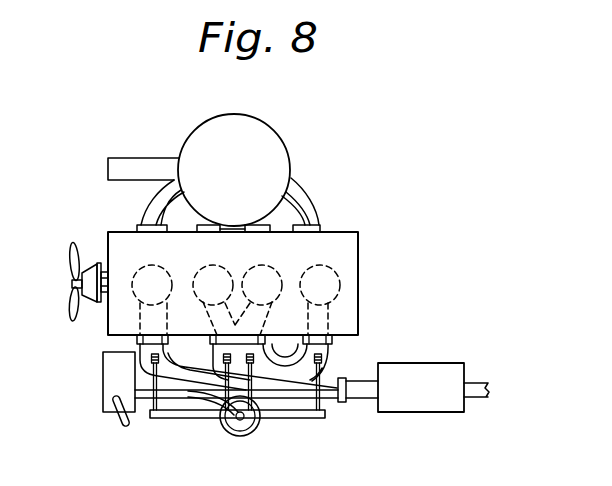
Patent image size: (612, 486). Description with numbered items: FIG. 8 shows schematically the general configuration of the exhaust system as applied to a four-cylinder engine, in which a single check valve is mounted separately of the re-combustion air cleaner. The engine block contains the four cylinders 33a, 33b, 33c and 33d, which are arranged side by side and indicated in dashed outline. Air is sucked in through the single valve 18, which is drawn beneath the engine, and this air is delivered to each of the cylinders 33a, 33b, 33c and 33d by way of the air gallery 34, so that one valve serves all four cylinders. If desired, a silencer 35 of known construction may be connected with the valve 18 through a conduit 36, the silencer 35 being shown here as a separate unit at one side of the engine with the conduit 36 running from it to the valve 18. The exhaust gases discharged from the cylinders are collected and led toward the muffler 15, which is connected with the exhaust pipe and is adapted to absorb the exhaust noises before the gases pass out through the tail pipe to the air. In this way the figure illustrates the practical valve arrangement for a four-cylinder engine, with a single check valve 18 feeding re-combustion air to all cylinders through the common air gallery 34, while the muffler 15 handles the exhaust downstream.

The muffler 15 is at (438, 370).
The valve 18 is at (259, 425).
The cylinder 33a is at (139, 280).
The cylinder 33b is at (207, 274).
The cylinder 33c is at (280, 277).
The cylinder 33d is at (339, 278).
The air gallery 34 is at (307, 419).
The silencer 35 is at (103, 408).
The conduit 36 is at (198, 399).